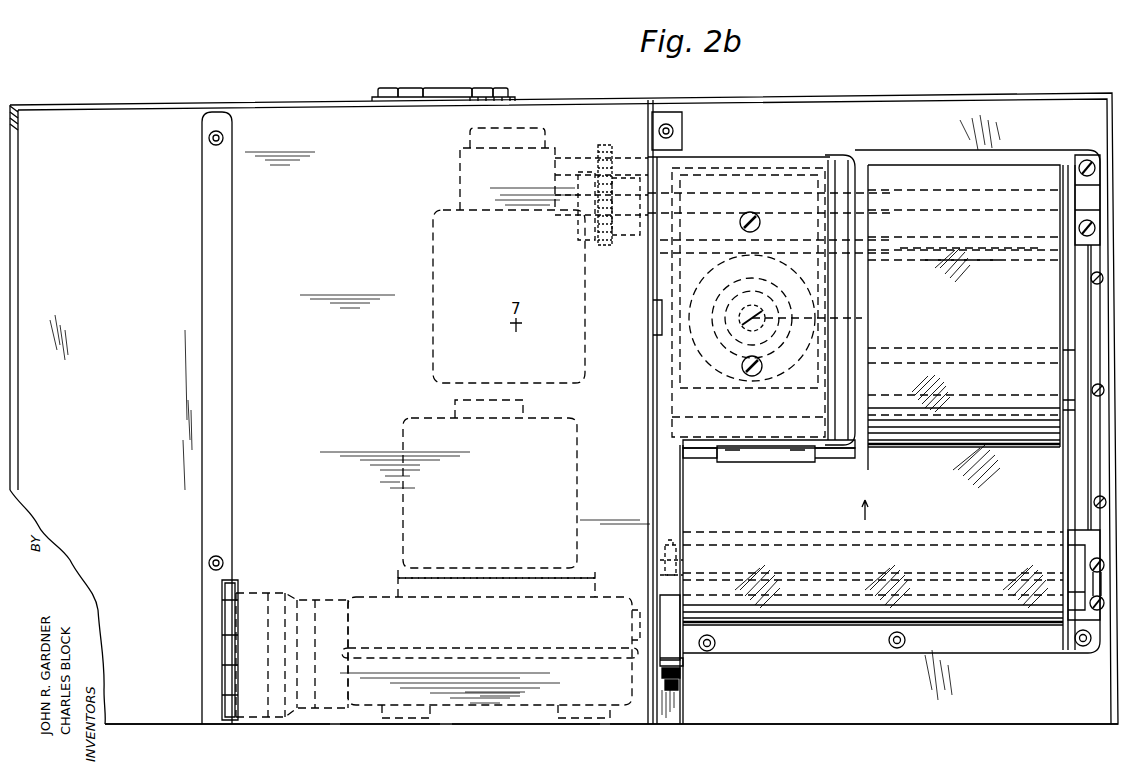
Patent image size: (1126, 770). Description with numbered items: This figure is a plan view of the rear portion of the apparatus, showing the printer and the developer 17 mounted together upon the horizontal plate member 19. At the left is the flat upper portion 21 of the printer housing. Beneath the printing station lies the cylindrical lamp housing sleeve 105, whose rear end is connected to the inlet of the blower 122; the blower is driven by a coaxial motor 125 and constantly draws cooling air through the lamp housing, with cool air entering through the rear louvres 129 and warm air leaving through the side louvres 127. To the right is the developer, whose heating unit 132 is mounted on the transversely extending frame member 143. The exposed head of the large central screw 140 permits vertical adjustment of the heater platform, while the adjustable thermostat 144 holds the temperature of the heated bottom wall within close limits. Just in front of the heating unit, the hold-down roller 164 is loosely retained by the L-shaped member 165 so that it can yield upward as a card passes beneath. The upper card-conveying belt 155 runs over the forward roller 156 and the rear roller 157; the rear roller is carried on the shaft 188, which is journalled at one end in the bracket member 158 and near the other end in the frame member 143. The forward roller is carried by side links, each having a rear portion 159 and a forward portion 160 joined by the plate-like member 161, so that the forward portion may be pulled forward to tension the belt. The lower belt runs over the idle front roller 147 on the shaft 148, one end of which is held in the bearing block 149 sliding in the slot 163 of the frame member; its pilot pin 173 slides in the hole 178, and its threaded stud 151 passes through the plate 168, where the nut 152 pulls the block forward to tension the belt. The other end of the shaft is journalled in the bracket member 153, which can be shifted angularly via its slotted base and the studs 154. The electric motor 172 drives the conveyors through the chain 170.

The horizontal plate member 19 is at (110, 104).
The upper portion of housing 21 is at (240, 515).
The developer 17 is at (950, 118).
The louvres 129 is at (430, 88).
The chain 170 is at (608, 162).
The electric motor 172 is at (433, 318).
The motor 125 is at (403, 441).
The blower 122 is at (368, 595).
The louvres 127 is at (225, 650).
The lamp housing sleeve 105 is at (440, 727).
The heating unit 132 is at (770, 230).
The screw 140 is at (862, 307).
The adjustable thermostat 144 is at (643, 348).
The frame member 143 is at (658, 462).
The hold-down roller 164 is at (705, 460).
The L-shaped member 165 is at (793, 462).
The rear roller 157 is at (995, 178).
The bracket member 158 is at (1090, 143).
The shaft 188 is at (950, 206).
The rear portion of side link 159 is at (862, 272).
The forward portion of side link 160 is at (862, 346).
The upper card-conveying belt 155 is at (918, 400).
The forward roller 156 is at (884, 446).
The plate-like member 161 is at (1000, 330).
The hole 178 is at (672, 545).
The pilot pin 173 is at (662, 560).
The bearing block 149 is at (665, 575).
The slot 163 is at (655, 628).
The plate 168 is at (683, 662).
The nut 152 is at (683, 673).
The threaded stud 151 is at (683, 686).
The idle front roller 147 is at (788, 620).
The shaft 148 is at (815, 600).
The studs 154 is at (1092, 563).
The bracket member 153 is at (1078, 618).